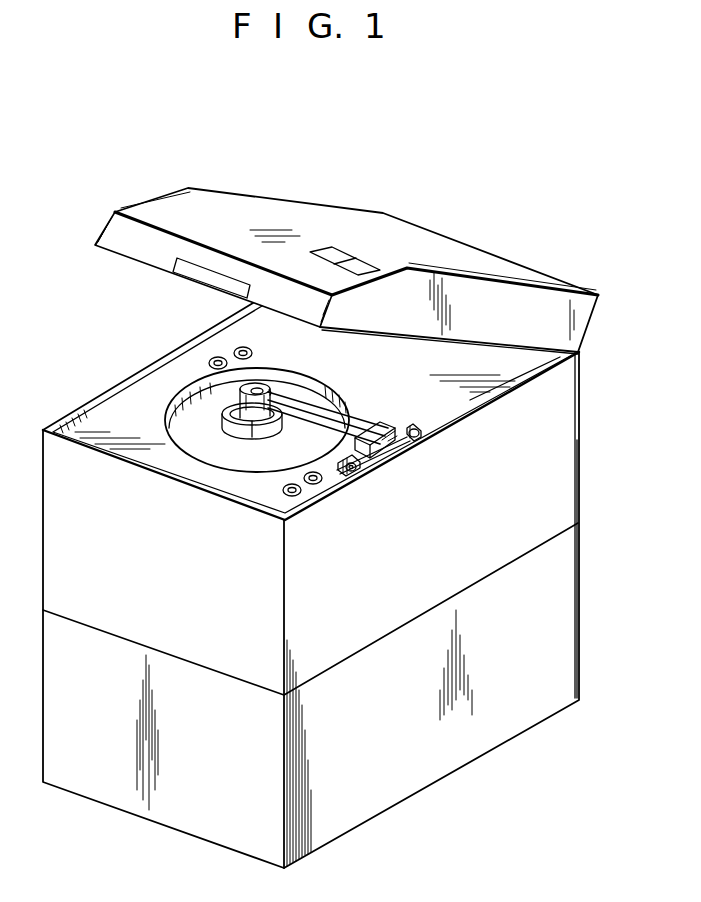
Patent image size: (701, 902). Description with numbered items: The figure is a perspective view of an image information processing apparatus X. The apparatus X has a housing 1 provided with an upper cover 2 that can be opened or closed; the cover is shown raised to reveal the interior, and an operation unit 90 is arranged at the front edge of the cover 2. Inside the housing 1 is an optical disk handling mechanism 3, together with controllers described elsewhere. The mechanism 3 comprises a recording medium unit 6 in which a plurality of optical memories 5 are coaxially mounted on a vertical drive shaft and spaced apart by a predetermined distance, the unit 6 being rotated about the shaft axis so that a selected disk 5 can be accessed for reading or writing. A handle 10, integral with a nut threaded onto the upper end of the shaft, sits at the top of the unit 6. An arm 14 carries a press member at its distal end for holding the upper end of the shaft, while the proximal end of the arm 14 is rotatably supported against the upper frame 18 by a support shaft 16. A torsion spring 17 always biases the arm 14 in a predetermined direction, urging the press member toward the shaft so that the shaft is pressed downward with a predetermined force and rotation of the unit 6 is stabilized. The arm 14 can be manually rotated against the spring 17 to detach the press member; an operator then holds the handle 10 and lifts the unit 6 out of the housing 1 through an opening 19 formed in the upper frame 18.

The housing 1 is at (570, 517).
The upper cover 2 is at (542, 295).
The optical disk handling mechanism 3 is at (187, 432).
The optical memory 5 is at (250, 467).
The recording medium unit 6 is at (237, 443).
The handle 10 is at (231, 432).
The arm 14 is at (350, 422).
The support shaft 16 is at (350, 478).
The torsion spring 17 is at (417, 445).
The upper frame 18 is at (467, 402).
The opening 19 is at (312, 374).
The operation unit 90 is at (340, 245).
The image information processing apparatus X is at (590, 472).